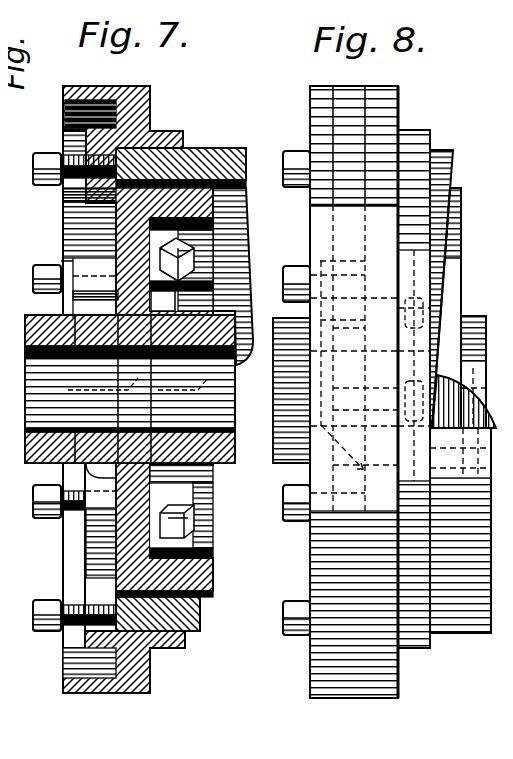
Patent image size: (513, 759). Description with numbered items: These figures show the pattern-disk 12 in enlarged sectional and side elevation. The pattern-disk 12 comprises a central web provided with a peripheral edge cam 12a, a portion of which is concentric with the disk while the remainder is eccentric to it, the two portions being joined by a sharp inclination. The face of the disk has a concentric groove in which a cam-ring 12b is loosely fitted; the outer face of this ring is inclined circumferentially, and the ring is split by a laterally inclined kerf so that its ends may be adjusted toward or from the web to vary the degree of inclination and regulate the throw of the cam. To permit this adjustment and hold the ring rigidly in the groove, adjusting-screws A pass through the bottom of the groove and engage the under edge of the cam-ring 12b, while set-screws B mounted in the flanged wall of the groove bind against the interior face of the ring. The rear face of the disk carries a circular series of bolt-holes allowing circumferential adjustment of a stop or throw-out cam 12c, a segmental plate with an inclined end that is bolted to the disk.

In FIG. 7, the pattern-disk 12 is at (117, 547).
In FIG. 8, the pattern-disk 12 is at (482, 511).
In FIG. 8, the peripheral edge cam 12a is at (351, 392).
In FIG. 7, the cam-ring 12b is at (237, 158).
In FIG. 7, the stop or throw-out cam 12c is at (77, 262).
In FIG. 7, the adjusting-screws A is at (38, 178).
In FIG. 8, the adjusting-screws A is at (287, 181).
In FIG. 7, the set-screws B is at (205, 272).